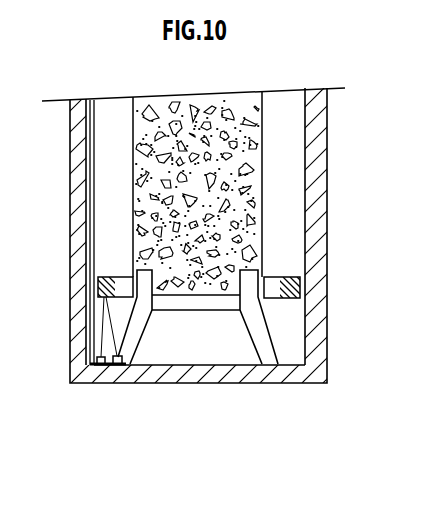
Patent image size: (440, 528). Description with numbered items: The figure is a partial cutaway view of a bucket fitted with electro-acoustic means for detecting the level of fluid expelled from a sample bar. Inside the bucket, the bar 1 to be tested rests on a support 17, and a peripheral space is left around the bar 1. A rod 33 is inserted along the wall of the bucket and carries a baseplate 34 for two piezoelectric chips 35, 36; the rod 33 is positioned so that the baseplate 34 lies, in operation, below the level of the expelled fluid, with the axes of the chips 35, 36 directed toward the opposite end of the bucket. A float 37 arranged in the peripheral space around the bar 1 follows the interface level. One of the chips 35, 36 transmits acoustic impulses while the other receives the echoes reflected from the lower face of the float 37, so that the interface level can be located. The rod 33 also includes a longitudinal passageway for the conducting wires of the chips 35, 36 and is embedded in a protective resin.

The bar 1 is at (133, 147).
The rod 33 is at (90, 242).
The float 37 is at (290, 277).
The support 17 is at (268, 328).
The piezoelectric chip 35 is at (100, 365).
The piezoelectric chip 36 is at (118, 365).
The baseplate 34 is at (110, 366).